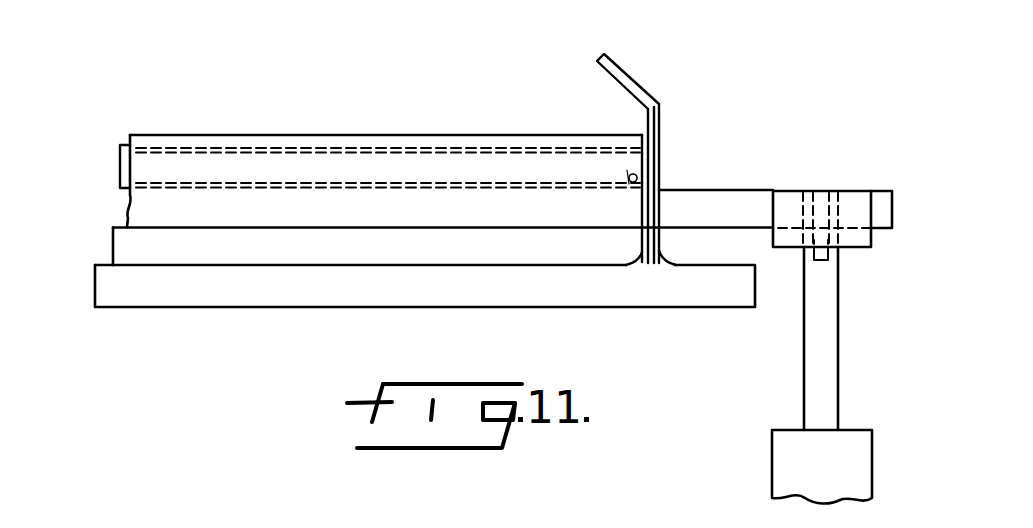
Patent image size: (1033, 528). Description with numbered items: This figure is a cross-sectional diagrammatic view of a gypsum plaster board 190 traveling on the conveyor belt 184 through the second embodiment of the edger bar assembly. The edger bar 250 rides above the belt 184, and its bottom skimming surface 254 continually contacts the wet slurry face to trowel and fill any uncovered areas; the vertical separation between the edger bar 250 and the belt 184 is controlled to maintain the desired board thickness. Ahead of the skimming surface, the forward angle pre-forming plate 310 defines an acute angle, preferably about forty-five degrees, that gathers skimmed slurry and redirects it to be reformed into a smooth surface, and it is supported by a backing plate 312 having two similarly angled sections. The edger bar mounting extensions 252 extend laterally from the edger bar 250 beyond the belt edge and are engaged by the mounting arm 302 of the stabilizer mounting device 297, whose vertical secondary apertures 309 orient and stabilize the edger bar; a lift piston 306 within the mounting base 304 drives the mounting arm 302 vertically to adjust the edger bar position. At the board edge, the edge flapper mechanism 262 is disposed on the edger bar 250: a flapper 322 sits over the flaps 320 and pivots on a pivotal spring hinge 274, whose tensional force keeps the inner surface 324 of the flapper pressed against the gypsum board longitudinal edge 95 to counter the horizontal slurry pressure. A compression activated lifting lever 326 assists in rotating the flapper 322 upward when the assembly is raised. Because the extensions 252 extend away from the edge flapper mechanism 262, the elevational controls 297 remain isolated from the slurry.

The forward angle pre-forming plate 310 is at (190, 138).
The backing plate 312 is at (118, 167).
The gypsum plaster board 190 is at (127, 243).
The conveyor belt 184 is at (222, 297).
The edger bar 250 is at (352, 213).
The bottom skimming surface 254 is at (455, 230).
The edge flapper mechanism 262 is at (684, 96).
The flaps 320 is at (660, 133).
The compression activated lifting lever 326 is at (628, 80).
The flapper 322 is at (642, 133).
The pivotal spring hinge 274 is at (640, 175).
The inner surface 324 is at (641, 252).
The gypsum board longitudinal edge 95 is at (643, 233).
The edger bar mounting extensions 252 is at (735, 200).
The mounting arm 302 is at (852, 198).
The vertical secondary apertures 309 is at (830, 272).
The lift piston 306 is at (810, 367).
The mounting base 304 is at (783, 473).
The stabilizer mounting device 297 is at (766, 426).